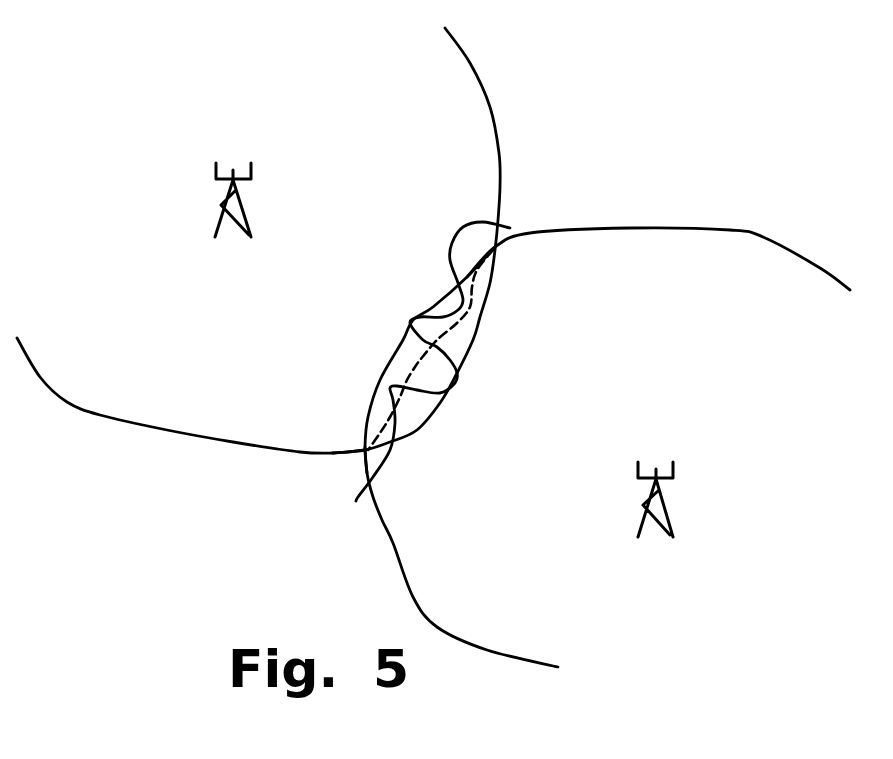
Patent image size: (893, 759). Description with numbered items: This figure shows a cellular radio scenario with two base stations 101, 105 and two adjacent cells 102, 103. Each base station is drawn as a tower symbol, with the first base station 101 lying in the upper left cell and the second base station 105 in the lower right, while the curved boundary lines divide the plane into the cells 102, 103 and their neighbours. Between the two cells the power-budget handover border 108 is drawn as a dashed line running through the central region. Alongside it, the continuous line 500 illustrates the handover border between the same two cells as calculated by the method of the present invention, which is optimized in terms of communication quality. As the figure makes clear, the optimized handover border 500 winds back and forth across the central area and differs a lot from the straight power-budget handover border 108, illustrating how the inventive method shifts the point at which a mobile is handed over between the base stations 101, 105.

The base station 101 is at (227, 197).
The cell 102 is at (62, 388).
The cell 103 is at (765, 232).
The base station 105 is at (672, 480).
The power-budget handover border 108 is at (467, 327).
The handover border 500 is at (447, 250).